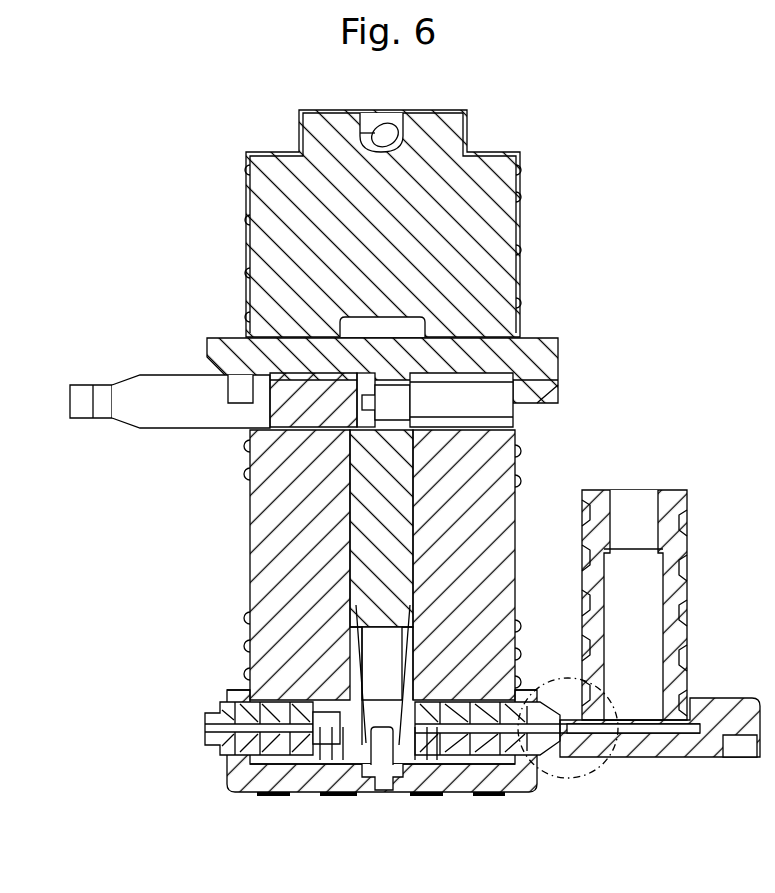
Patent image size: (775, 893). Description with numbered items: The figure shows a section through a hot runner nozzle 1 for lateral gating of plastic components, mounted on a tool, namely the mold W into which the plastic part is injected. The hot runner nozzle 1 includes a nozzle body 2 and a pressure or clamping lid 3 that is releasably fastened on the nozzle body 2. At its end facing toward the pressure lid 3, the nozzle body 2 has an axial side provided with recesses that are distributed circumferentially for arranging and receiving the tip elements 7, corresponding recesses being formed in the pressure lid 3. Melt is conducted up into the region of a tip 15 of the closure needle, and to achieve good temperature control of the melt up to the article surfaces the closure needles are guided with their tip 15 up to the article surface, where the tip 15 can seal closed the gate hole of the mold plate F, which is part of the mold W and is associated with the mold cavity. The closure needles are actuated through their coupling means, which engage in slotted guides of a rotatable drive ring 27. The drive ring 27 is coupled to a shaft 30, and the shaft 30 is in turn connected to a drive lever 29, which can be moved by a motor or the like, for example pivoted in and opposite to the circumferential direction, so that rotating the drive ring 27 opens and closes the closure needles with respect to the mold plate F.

The hot runner nozzle 1 is at (510, 450).
The nozzle body 2 is at (483, 493).
The pressure lid 3 is at (235, 768).
The tip elements 7 is at (223, 698).
The tip 15 is at (205, 728).
The drive ring 27 is at (418, 749).
The drive lever 29 is at (137, 395).
The shaft 30 is at (372, 528).
The mold plate F is at (590, 727).
The mold W is at (738, 697).